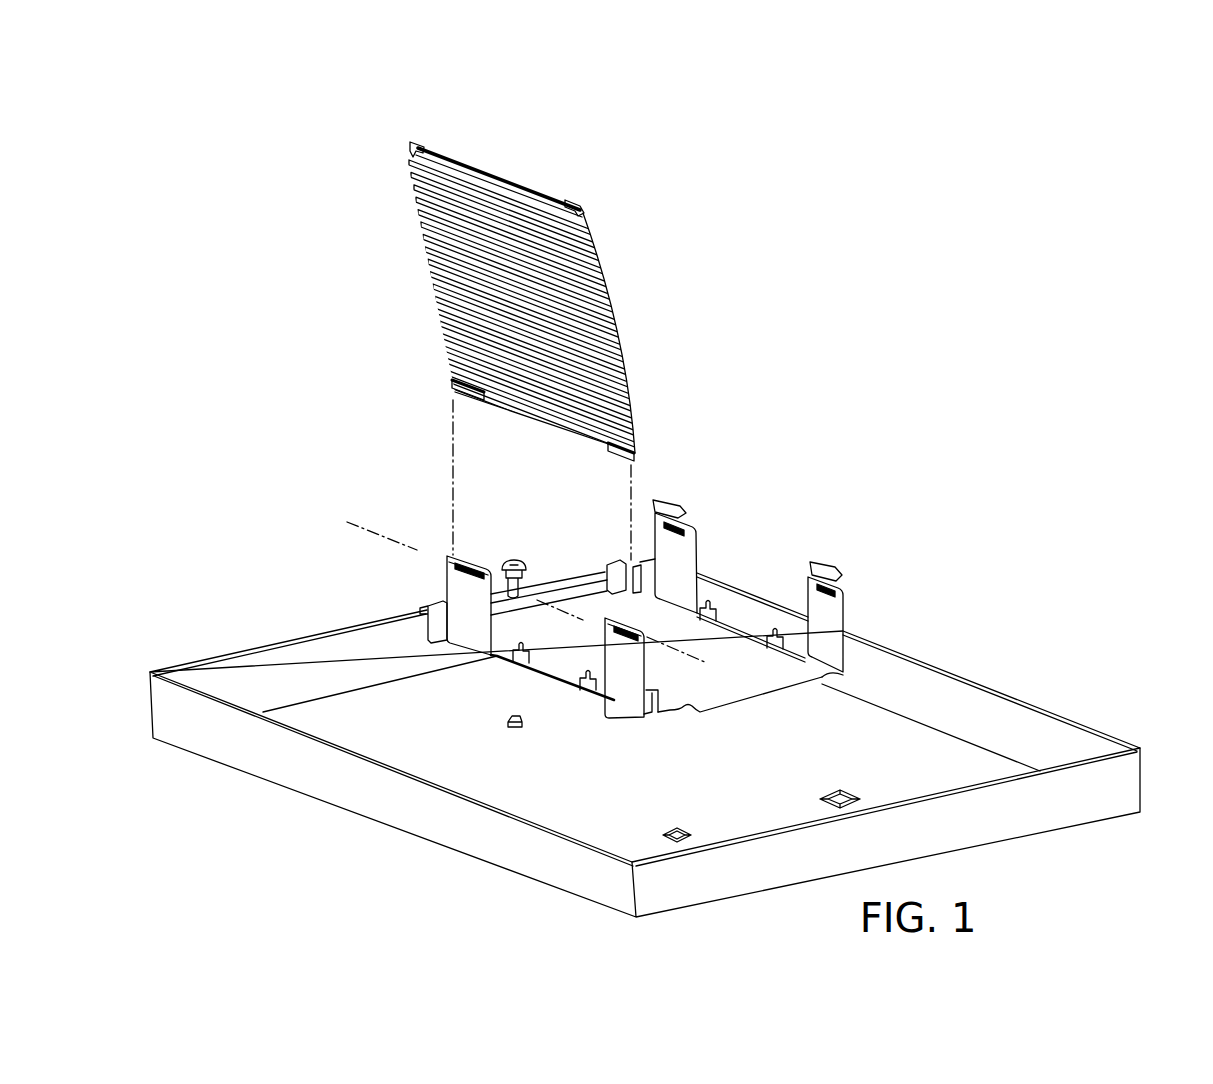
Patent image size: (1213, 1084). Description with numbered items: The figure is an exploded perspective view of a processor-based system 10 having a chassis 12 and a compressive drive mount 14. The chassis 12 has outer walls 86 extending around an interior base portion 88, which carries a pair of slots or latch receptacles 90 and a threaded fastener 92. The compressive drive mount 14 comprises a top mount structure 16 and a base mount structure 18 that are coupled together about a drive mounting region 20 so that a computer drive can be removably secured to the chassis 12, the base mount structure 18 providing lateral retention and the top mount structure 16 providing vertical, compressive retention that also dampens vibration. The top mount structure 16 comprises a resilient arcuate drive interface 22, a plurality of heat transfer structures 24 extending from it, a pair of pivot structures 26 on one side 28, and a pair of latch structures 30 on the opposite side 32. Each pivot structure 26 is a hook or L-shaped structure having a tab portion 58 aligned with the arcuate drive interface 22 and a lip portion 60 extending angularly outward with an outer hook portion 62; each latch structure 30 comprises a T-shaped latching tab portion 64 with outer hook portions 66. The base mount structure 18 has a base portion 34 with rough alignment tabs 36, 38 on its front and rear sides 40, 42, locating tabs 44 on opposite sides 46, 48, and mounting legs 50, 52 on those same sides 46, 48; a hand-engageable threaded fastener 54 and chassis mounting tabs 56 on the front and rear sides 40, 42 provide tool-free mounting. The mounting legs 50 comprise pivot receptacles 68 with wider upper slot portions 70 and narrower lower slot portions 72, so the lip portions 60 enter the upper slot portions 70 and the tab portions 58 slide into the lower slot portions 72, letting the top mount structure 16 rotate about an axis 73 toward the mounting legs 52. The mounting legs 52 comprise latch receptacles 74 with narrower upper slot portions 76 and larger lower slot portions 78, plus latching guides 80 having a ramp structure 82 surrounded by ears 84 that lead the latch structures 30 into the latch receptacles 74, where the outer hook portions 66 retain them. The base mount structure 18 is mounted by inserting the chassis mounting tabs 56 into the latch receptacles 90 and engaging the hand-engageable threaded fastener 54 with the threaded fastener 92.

The processor-based system 10 is at (975, 325).
The chassis 12 is at (1117, 708).
The compressive drive mount 14 is at (585, 323).
The top mount structure 16 is at (660, 190).
The base mount structure 18 is at (910, 573).
The drive mounting region 20 is at (643, 589).
The arcuate drive interface 22 is at (620, 325).
The heat transfer structures 24 is at (428, 258).
The pivot structures 26 is at (534, 461).
The side 28 is at (548, 418).
The latch structures 30 is at (428, 132).
The side 32 is at (485, 165).
The base portion 34 is at (732, 688).
The rough alignment tabs 36 is at (613, 562).
The rough alignment tabs 38 is at (650, 720).
The front side 40 is at (538, 586).
The rear side 42 is at (792, 686).
The locating tabs 44 is at (708, 598).
The side 46 is at (553, 675).
The side 48 is at (738, 606).
The mounting legs 50 is at (518, 648).
The mounting legs 52 is at (780, 547).
The hand-engageable threaded fastener 54 is at (516, 560).
The chassis mounting tabs 56 is at (694, 716).
The tab portion 58 is at (452, 382).
The lip portion 60 is at (455, 395).
The outer hook portion 62 is at (482, 400).
The latching tab portions 64 is at (421, 143).
The outer hook portions 66 is at (410, 148).
The pivot receptacles 68 is at (437, 578).
The upper slot portions 70 is at (468, 577).
The lower slot portions 72 is at (470, 578).
The axis 73 is at (372, 532).
The latch receptacles 74 is at (650, 522).
The upper slot portions 76 is at (688, 533).
The lower slot portions 78 is at (670, 533).
The latching guides 80 is at (773, 507).
The ramp structure 82 is at (688, 507).
The ears 84 is at (655, 502).
The outer walls 86 is at (1127, 790).
The interior base portion 88 is at (792, 808).
The latch receptacles 90 is at (683, 822).
The threaded fastener 92 is at (508, 722).